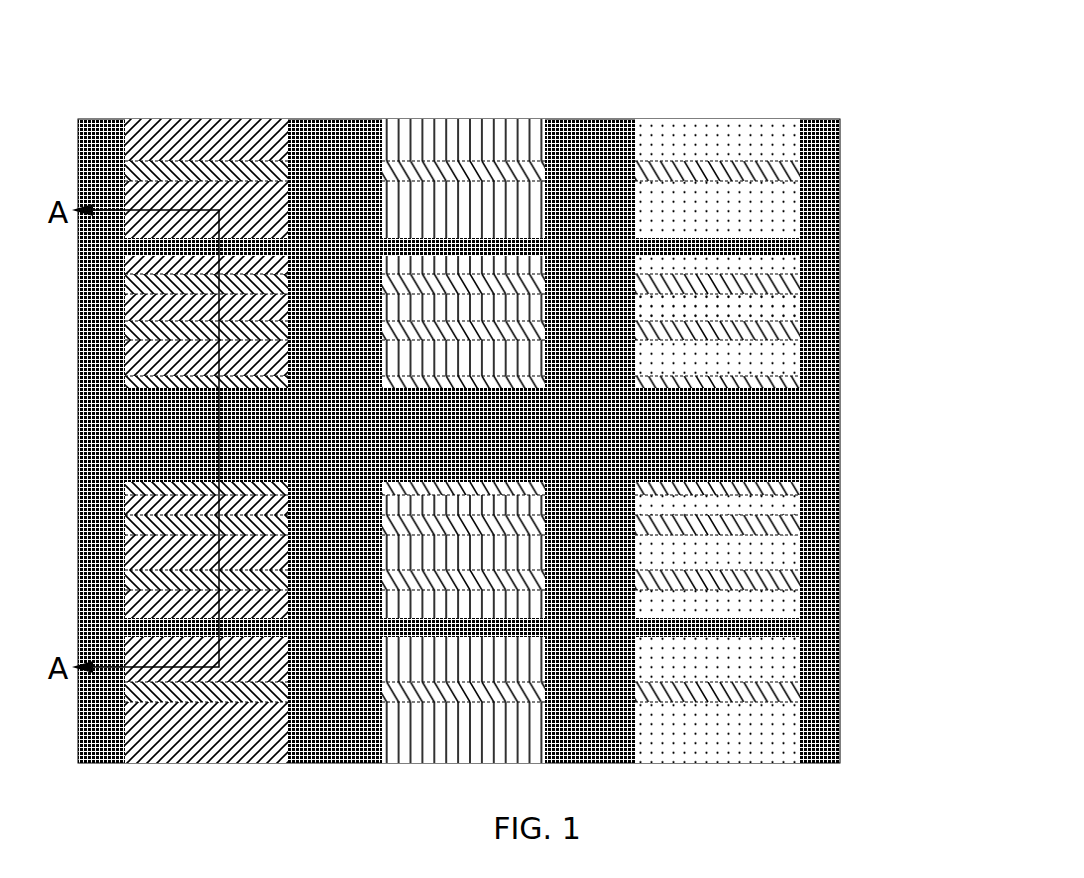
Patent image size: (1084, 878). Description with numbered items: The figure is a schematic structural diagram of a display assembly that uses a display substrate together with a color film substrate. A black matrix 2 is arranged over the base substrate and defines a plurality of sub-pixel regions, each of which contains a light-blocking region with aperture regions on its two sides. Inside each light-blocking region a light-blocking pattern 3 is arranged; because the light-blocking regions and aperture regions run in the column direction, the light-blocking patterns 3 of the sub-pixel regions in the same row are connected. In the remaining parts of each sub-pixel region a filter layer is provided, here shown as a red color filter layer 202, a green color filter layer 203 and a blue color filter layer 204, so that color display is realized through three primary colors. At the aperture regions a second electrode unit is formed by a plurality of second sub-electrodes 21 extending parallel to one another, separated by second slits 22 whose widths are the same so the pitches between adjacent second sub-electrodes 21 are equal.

The black matrix 2 is at (590, 136).
The light-blocking pattern 3 is at (767, 431).
The second sub-electrodes 21 is at (782, 282).
The second slits 22 is at (800, 305).
The red color filter layer 202 is at (210, 142).
The green color filter layer 203 is at (459, 140).
The blue color filter layer 204 is at (709, 140).